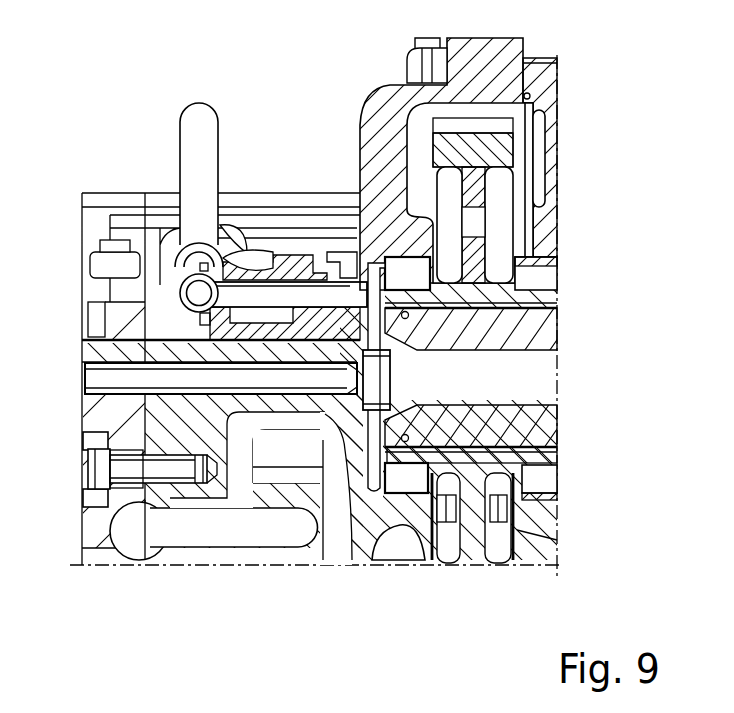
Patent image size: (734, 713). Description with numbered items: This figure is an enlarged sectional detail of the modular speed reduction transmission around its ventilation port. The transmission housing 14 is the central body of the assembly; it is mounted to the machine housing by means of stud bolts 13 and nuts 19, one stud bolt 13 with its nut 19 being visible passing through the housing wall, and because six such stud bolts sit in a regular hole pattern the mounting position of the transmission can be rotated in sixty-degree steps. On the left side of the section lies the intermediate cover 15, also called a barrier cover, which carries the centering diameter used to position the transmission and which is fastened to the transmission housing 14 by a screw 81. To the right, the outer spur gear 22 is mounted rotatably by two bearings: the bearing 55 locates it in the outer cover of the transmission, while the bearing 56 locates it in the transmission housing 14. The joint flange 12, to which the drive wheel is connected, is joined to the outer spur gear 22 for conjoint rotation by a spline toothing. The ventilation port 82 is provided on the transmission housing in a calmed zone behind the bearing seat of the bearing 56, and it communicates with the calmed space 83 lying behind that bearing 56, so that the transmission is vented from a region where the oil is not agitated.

The joint flange 12 is at (543, 422).
The stud bolt 13 is at (90, 375).
The transmission housing 14 is at (385, 102).
The intermediate cover 15 is at (90, 418).
The nut 19 is at (378, 373).
The outer spur gear 22 is at (493, 157).
The bearing 55 is at (543, 275).
The bearing 56 is at (388, 258).
The screw 81 is at (100, 468).
The ventilation port 82 is at (187, 298).
The calmed space 83 is at (390, 332).